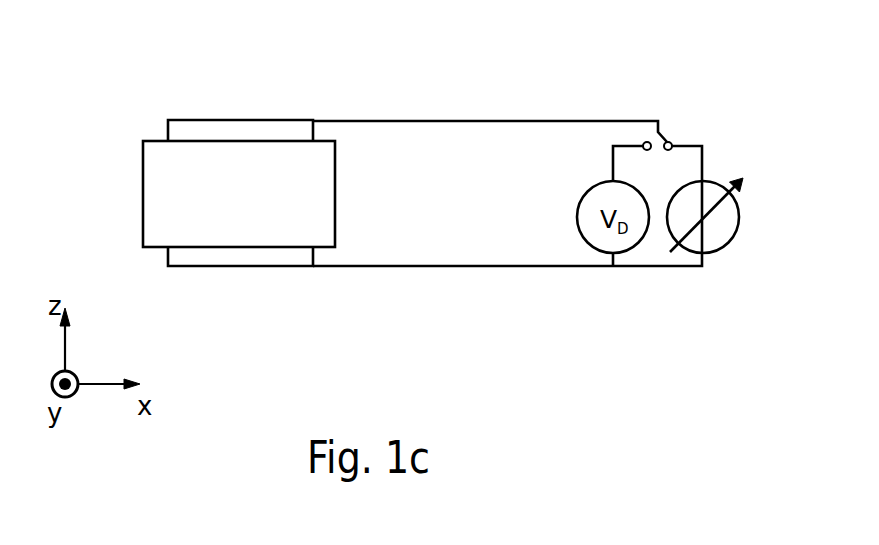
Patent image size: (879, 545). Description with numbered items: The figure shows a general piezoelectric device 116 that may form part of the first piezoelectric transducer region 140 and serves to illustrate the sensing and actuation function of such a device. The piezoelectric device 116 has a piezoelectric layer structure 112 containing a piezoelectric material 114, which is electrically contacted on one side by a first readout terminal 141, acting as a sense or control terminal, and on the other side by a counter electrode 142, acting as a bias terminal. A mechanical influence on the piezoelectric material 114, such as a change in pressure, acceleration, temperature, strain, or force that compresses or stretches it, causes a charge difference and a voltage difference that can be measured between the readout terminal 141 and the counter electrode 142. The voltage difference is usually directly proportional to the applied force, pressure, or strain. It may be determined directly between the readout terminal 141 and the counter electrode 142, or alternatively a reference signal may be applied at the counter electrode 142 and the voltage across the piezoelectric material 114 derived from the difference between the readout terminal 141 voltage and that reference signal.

The first piezoelectric transducer region 140 is at (356, 179).
The piezoelectric structure 112 is at (151, 82).
The piezoelectric material 114 is at (148, 192).
The first readout terminal 141 is at (240, 128).
The counter electrode 142 is at (243, 257).
The piezoelectric device 116 is at (297, 137).